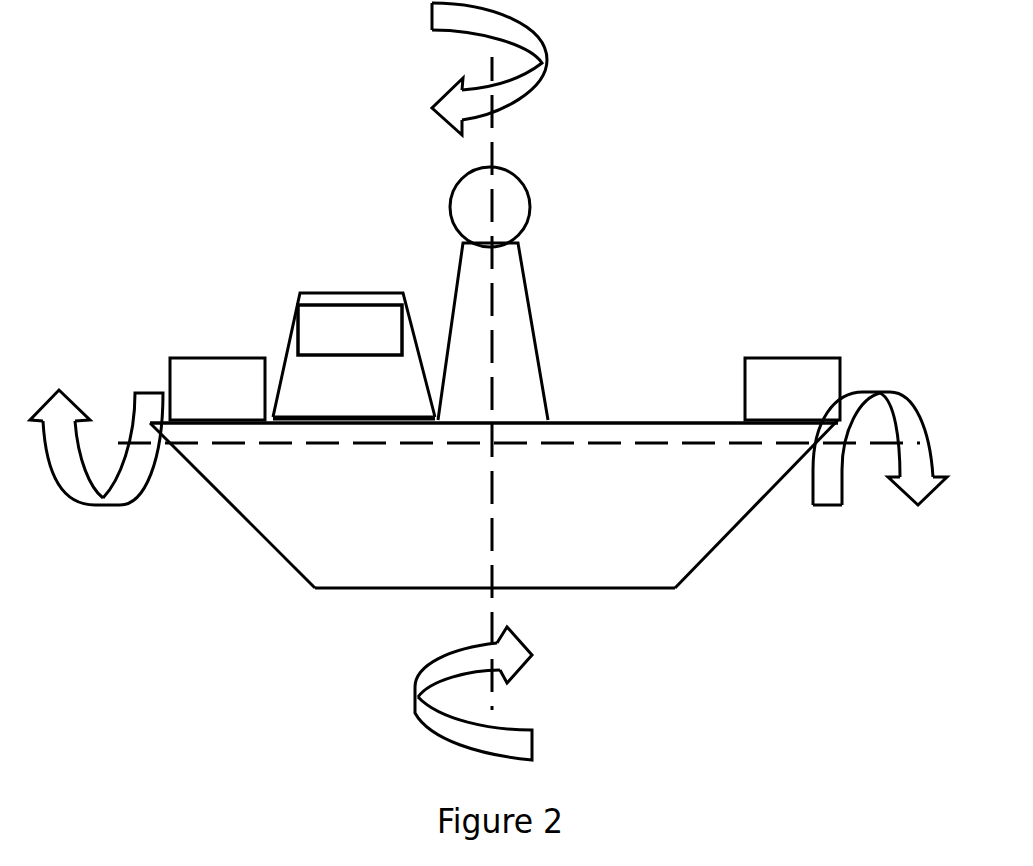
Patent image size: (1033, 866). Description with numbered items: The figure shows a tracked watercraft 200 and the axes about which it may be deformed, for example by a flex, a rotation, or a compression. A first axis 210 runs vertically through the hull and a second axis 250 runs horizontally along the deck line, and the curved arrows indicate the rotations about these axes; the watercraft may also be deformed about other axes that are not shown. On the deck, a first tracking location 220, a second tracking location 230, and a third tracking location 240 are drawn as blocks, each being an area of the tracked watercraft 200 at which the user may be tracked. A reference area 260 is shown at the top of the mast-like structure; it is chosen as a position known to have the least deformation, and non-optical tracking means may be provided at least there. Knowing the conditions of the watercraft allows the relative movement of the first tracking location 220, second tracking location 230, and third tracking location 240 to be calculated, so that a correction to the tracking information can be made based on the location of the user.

The tracked watercraft 200 is at (494, 504).
The first axis 210 is at (498, 590).
The first tracking location 220 is at (354, 355).
The second tracking location 230 is at (217, 389).
The third tracking location 240 is at (792, 389).
The second axis 250 is at (163, 448).
The reference area 260 is at (532, 205).